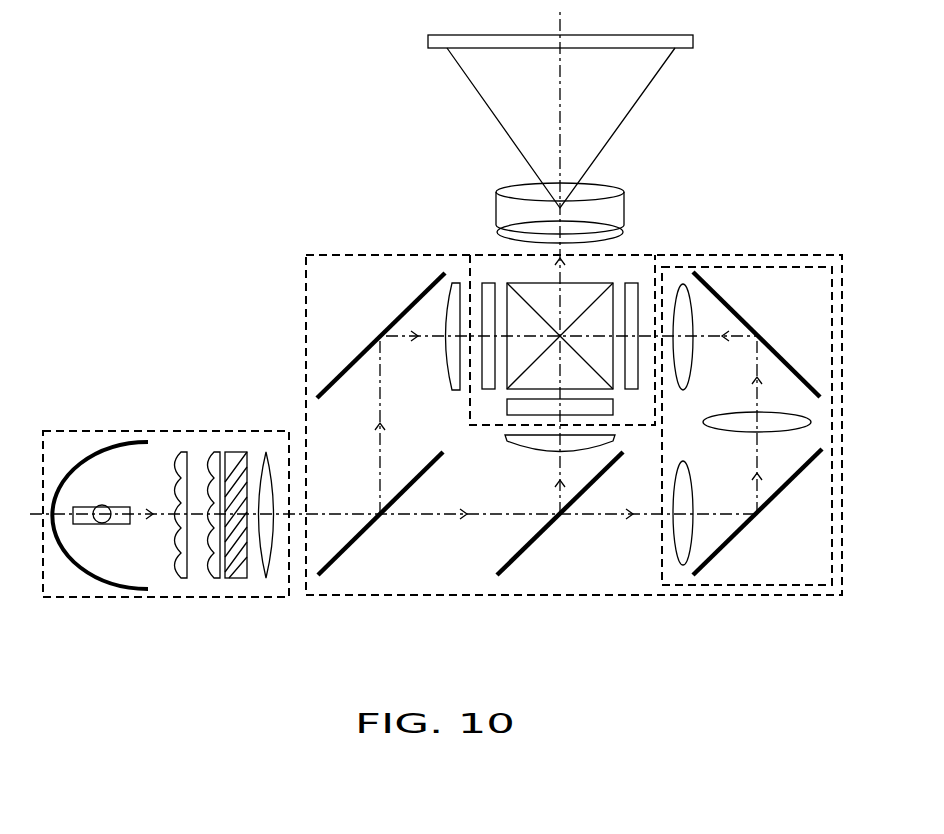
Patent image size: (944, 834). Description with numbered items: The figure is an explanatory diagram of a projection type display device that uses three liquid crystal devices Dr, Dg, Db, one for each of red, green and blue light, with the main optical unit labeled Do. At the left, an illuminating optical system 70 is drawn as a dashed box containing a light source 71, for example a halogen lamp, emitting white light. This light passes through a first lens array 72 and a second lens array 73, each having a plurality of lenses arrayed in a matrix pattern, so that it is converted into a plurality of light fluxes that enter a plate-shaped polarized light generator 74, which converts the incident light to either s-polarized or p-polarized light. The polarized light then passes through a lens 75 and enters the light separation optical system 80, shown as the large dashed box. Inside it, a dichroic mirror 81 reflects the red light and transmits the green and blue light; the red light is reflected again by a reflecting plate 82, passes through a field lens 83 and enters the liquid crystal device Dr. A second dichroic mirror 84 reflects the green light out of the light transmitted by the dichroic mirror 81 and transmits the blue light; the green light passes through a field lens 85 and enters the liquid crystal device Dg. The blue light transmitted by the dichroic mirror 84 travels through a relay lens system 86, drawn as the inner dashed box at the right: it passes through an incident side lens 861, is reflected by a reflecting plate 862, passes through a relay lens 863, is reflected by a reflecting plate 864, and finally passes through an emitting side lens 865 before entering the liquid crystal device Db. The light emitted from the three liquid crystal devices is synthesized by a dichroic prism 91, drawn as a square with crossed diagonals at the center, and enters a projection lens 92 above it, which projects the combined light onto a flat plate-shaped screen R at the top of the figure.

The illuminating optical system 70 is at (134, 597).
The light source 71 is at (98, 442).
The first lens array 72 is at (182, 452).
The second lens array 73 is at (225, 452).
The polarized light generator 74 is at (236, 578).
The lens 75 is at (266, 452).
The light separation optical system 80 is at (455, 595).
The dichroic mirror 81 is at (353, 543).
The reflecting plate 82 is at (407, 310).
The field lens 83 is at (447, 372).
The dichroic mirror 84 is at (535, 543).
The field lens 85 is at (513, 450).
The relay lens system 86 is at (747, 585).
The incident side lens 861 is at (673, 528).
The reflecting plate 862 is at (728, 547).
The relay lens 863 is at (728, 433).
The reflecting plate 864 is at (773, 352).
The emitting side lens 865 is at (693, 355).
The dichroic prism 91 is at (540, 282).
The projection lens 92 is at (627, 212).
The liquid crystal device Dr is at (486, 283).
The liquid crystal device Db is at (634, 283).
The liquid crystal device Dg is at (507, 407).
The optical device Do is at (232, 333).
The screen R is at (600, 48).